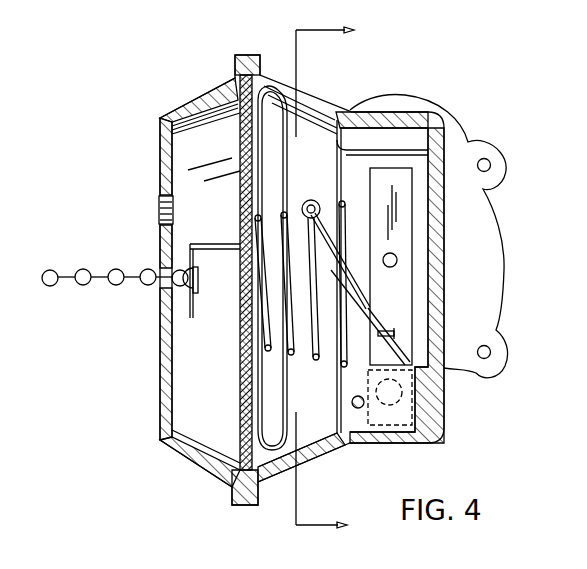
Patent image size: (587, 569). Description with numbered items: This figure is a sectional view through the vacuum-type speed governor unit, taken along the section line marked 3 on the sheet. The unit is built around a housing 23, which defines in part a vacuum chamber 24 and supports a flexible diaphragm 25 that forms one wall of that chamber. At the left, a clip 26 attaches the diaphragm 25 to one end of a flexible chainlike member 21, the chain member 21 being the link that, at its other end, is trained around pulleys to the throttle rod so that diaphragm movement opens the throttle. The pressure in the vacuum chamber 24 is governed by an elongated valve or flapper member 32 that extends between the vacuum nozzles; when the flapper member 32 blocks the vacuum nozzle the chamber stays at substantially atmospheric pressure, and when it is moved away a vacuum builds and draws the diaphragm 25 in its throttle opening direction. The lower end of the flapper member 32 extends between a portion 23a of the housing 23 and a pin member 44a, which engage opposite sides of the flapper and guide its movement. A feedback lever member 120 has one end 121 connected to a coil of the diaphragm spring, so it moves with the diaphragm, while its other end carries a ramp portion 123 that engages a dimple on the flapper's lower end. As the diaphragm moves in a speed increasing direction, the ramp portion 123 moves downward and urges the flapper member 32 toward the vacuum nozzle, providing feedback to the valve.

The chain member 21 is at (75, 287).
The housing 23 is at (193, 103).
The housing portion 23a is at (424, 400).
The vacuum chamber 24 is at (311, 110).
The flexible diaphragm 25 is at (287, 103).
The clip 26 is at (184, 268).
The flapper member 32 is at (398, 243).
The pin member 44a is at (359, 410).
The lever member 120 is at (338, 283).
The lever end 121 is at (166, 197).
The ramp portion 123 is at (414, 448).
The section line 3- 3 is at (333, 279).